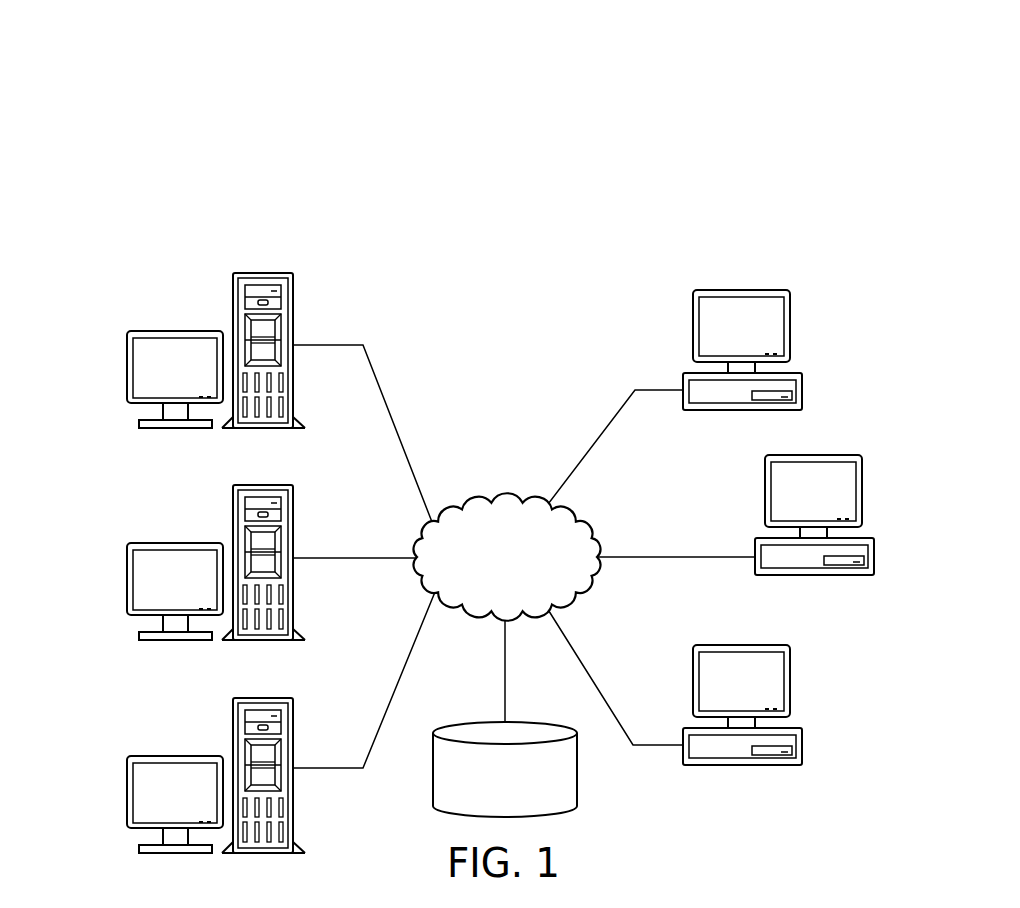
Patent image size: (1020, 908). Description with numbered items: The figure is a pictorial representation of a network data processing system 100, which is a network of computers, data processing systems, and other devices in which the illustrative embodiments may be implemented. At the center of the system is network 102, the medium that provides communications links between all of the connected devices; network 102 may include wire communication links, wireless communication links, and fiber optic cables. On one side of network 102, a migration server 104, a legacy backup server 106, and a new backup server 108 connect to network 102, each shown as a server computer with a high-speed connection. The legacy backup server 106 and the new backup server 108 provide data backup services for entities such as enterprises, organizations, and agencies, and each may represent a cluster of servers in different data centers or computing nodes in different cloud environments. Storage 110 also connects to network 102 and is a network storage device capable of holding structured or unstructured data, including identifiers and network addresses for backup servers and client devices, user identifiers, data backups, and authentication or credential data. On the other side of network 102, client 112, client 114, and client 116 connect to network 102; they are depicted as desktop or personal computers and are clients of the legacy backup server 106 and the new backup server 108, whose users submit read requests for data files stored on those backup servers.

The network data processing system 100 is at (250, 86).
The network 102 is at (485, 503).
The migration server 104 is at (127, 790).
The legacy backup server 106 is at (127, 580).
The new backup server 108 is at (127, 368).
The storage 110 is at (578, 770).
The client 112 is at (802, 383).
The client 114 is at (873, 565).
The client 116 is at (802, 755).